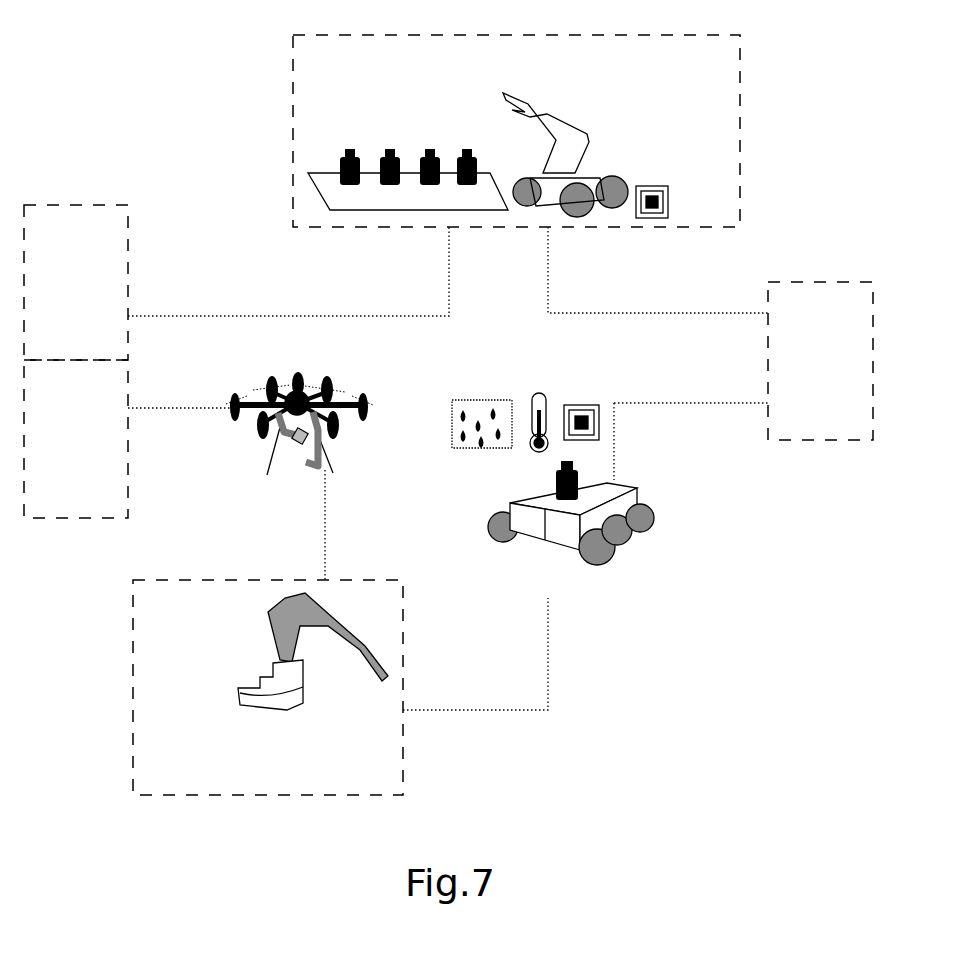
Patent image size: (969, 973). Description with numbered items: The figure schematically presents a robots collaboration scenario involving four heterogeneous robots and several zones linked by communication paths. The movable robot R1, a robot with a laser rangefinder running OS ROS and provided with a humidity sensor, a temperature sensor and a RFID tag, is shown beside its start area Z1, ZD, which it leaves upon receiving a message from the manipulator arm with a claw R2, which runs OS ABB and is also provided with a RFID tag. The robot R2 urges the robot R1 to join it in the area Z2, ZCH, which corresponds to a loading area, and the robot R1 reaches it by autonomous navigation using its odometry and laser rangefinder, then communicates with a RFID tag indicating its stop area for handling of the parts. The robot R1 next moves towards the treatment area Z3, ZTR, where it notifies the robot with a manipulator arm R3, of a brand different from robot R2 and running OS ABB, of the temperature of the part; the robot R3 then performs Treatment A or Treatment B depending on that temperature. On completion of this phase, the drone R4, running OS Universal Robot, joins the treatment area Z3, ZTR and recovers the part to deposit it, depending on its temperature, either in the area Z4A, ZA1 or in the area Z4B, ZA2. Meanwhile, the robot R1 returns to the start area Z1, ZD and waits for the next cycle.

The movable robot R1 is at (553, 495).
The manipulator arm with a claw R2 is at (565, 136).
The robot with a manipulator arm R3 is at (313, 692).
The drone R4 is at (299, 403).
The start area Z1 is at (820, 361).
The area Z2 is at (516, 131).
The treatment area Z3 is at (268, 687).
The area Z4A is at (76, 282).
The area Z4B is at (76, 439).
The zone area 1 ZA1 is at (76, 282).
The zone area 2 ZA2 is at (76, 439).
The loading area ZCH is at (516, 131).
The start area ZD is at (820, 361).
The treatment area ZTR is at (268, 687).